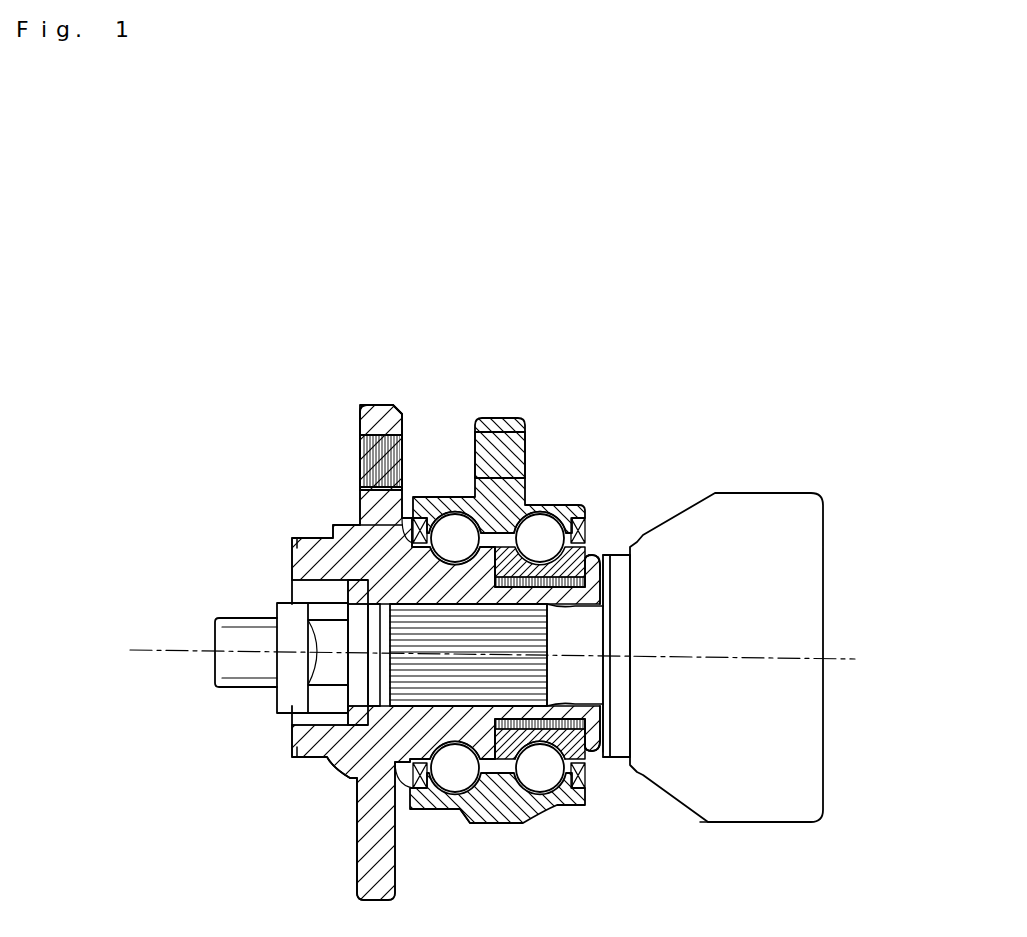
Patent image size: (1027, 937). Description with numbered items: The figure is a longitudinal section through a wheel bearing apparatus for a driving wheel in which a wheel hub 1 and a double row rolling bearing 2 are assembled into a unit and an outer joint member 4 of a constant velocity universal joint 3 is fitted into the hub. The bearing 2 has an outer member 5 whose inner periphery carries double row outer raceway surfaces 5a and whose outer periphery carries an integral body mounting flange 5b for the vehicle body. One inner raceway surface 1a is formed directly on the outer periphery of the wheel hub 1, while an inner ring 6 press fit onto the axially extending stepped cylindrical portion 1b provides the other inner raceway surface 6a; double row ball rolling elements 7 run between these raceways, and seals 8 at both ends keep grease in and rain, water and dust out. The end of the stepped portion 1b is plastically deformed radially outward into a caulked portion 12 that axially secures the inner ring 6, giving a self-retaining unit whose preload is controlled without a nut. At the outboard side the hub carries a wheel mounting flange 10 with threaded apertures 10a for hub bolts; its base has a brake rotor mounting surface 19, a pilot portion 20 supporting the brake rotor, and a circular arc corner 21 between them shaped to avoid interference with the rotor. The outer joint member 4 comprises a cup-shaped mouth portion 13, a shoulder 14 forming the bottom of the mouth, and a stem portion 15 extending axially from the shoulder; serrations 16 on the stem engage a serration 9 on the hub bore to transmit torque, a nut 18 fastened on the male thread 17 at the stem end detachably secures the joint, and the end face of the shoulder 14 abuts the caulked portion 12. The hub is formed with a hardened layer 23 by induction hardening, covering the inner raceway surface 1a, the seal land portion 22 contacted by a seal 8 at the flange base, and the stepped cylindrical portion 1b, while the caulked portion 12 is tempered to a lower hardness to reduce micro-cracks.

The wheel hub 1 is at (325, 790).
The inner raceway surface 1a is at (350, 560).
The axially extending stepped cylindrical portion 1b is at (640, 560).
The double row rolling bearing 2 is at (463, 818).
The constant velocity universal joint 3 is at (768, 488).
The outer joint member 4 is at (710, 826).
The outer member 5 is at (498, 800).
The outer raceway surfaces 5a is at (455, 513).
The body mounting flange 5b is at (503, 425).
The inner ring 6 is at (590, 765).
The inner raceway surface 6a is at (548, 755).
The rolling elements 7 is at (450, 538).
The seals 8 is at (418, 795).
The serration 9 is at (372, 625).
The wheel mounting flange 10 is at (382, 408).
The threaded apertures 10a is at (365, 460).
The caulked portion 12 is at (598, 560).
The cup-shaped mouth portion 13 is at (770, 800).
The shoulder 14 is at (620, 556).
The stem portion 15 is at (573, 637).
The serrations 16 is at (380, 655).
The male thread 17 is at (228, 676).
The nut 18 is at (315, 636).
The brake rotor mounting surface 19 is at (357, 870).
The pilot portion 20 is at (338, 772).
The corner 21 is at (357, 820).
The seal land portion 22 is at (428, 500).
The hardened layer 23 is at (598, 712).